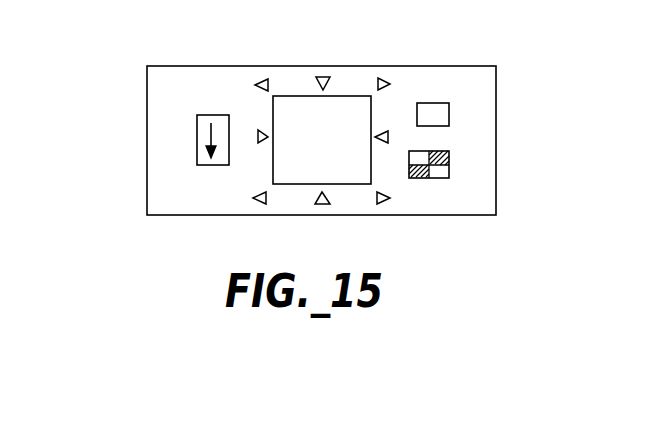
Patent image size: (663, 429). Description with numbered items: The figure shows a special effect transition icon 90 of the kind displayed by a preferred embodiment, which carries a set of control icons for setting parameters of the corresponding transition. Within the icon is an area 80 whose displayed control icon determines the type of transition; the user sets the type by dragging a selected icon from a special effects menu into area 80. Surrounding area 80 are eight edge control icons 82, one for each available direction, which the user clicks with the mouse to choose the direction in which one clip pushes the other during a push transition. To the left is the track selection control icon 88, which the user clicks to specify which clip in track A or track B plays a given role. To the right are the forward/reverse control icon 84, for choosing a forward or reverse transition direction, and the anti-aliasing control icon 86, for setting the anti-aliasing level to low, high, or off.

The area 80 is at (308, 147).
The edge control icons 82 is at (269, 85).
The forward/reverse control icon 84 is at (427, 103).
The anti-aliasing control icon 86 is at (449, 167).
The track selection control icon 88 is at (211, 115).
The transition icon 90 is at (147, 102).